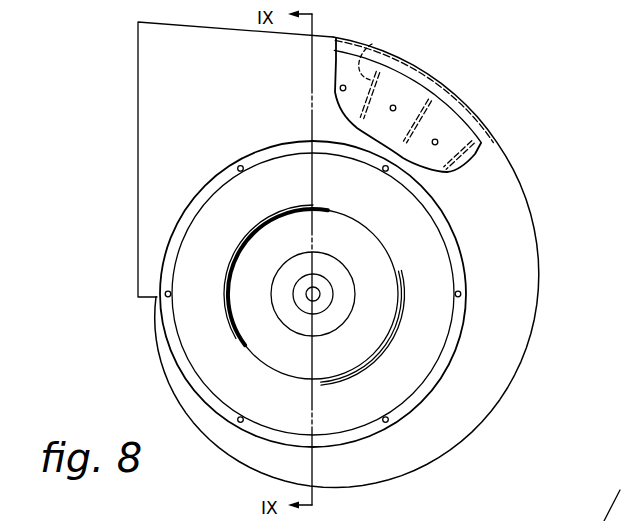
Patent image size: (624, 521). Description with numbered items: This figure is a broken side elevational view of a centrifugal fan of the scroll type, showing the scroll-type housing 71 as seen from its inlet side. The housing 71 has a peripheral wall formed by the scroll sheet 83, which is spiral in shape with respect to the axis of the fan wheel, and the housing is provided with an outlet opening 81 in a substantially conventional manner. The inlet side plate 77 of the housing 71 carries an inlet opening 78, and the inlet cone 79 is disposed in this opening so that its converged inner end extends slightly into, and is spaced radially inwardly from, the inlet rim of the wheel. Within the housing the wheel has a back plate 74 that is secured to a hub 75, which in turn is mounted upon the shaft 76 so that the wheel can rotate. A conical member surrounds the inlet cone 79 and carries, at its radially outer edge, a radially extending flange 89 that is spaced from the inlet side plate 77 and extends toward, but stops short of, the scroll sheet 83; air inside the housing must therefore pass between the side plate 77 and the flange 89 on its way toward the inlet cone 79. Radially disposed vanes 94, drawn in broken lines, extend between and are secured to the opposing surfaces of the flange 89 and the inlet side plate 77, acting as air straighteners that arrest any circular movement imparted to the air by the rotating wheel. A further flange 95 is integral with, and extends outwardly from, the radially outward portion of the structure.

The scroll-type housing 71 is at (543, 246).
The back plate 74 is at (377, 338).
The hub 75 is at (330, 290).
The shaft 76 is at (306, 293).
The inlet side plate 77 is at (207, 121).
The inlet opening 78 is at (413, 235).
The inlet cone 79 is at (266, 215).
The outlet opening 81 is at (121, 177).
The scroll sheet 83 is at (416, 68).
The radial flange 89 is at (448, 118).
The vanes 94 is at (373, 46).
The flange 95 is at (457, 323).